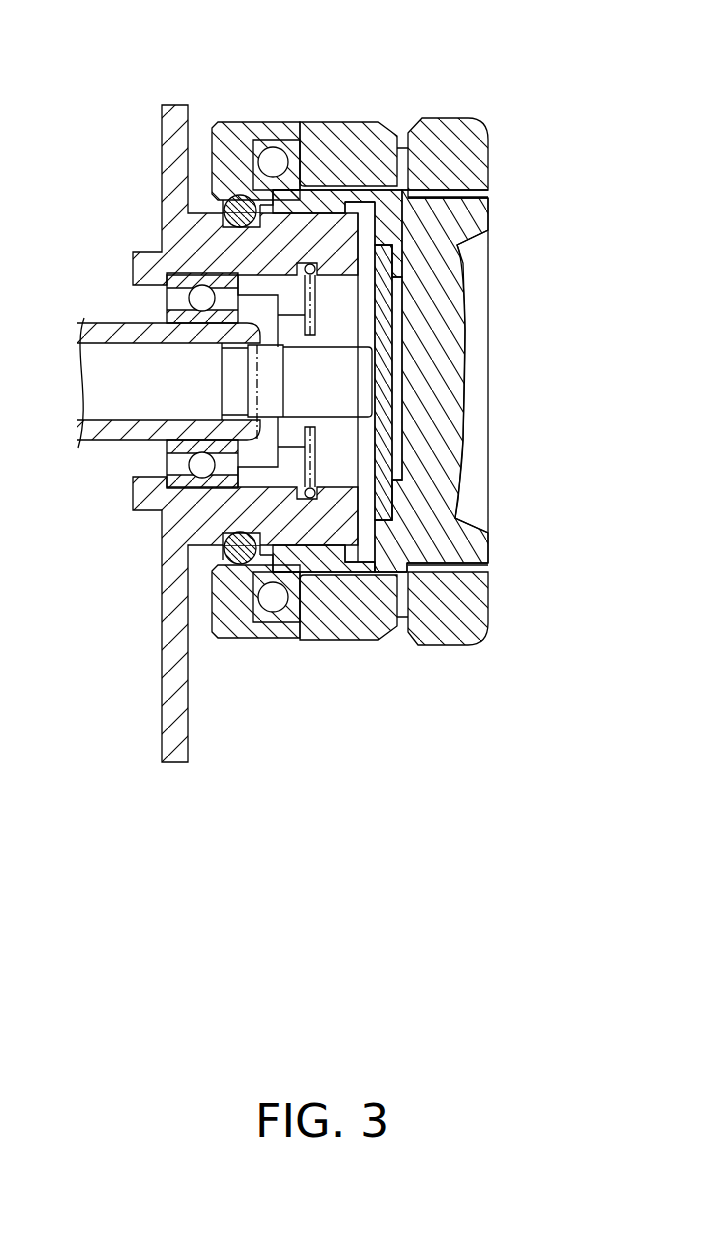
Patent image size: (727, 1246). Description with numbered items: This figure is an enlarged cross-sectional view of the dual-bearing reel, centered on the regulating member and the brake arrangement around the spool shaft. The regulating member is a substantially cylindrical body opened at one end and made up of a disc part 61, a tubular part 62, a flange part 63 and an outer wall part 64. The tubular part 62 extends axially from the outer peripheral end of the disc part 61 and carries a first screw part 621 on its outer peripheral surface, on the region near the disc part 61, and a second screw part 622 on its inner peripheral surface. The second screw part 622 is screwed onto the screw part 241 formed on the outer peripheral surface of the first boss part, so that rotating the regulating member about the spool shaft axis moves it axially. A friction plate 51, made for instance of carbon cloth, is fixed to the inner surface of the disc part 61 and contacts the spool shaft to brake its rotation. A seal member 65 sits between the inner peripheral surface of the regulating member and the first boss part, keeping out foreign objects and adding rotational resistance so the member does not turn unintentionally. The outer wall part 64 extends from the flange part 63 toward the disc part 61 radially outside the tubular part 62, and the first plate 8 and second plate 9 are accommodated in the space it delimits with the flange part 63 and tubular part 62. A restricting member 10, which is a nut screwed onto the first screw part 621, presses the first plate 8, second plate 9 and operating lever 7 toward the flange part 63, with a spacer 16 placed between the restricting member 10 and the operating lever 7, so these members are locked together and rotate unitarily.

The operating lever 7 is at (313, 635).
The first plate 8 is at (265, 615).
The second plate 9 is at (288, 612).
The restricting member 10 is at (452, 633).
The spacer 16 is at (400, 620).
The friction plate 51 is at (385, 482).
The disc part 61 is at (445, 357).
The tubular part 62 is at (313, 205).
The flange part 63 is at (233, 162).
The outer wall part 64 is at (271, 135).
The seal member 65 is at (233, 560).
The screw part 241 is at (350, 202).
The first screw part 621 is at (447, 170).
The second screw part 622 is at (312, 225).